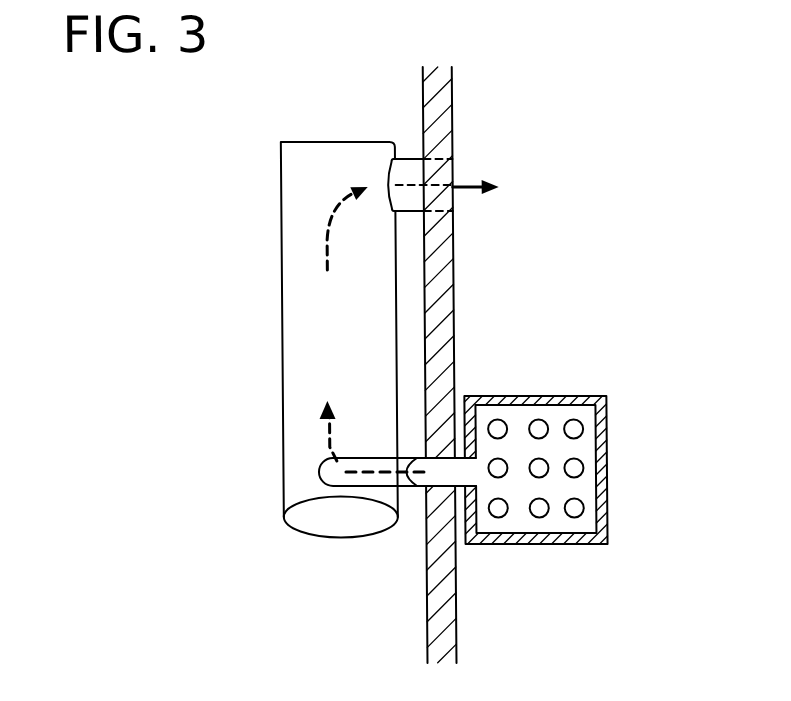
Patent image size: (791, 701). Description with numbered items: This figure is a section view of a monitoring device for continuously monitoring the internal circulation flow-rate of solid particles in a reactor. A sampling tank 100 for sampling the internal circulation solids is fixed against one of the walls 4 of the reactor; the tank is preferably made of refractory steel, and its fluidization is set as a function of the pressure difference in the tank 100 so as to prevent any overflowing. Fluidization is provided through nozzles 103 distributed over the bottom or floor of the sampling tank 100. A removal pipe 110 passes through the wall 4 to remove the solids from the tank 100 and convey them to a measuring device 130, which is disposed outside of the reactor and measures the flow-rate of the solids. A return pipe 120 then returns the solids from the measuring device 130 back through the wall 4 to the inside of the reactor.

The wall 4 is at (445, 122).
The sampling tank 100 is at (526, 413).
The nozzles 103 is at (539, 503).
The removal pipe 110 is at (420, 479).
The return pipe 120 is at (411, 170).
The measuring device 130 is at (308, 233).